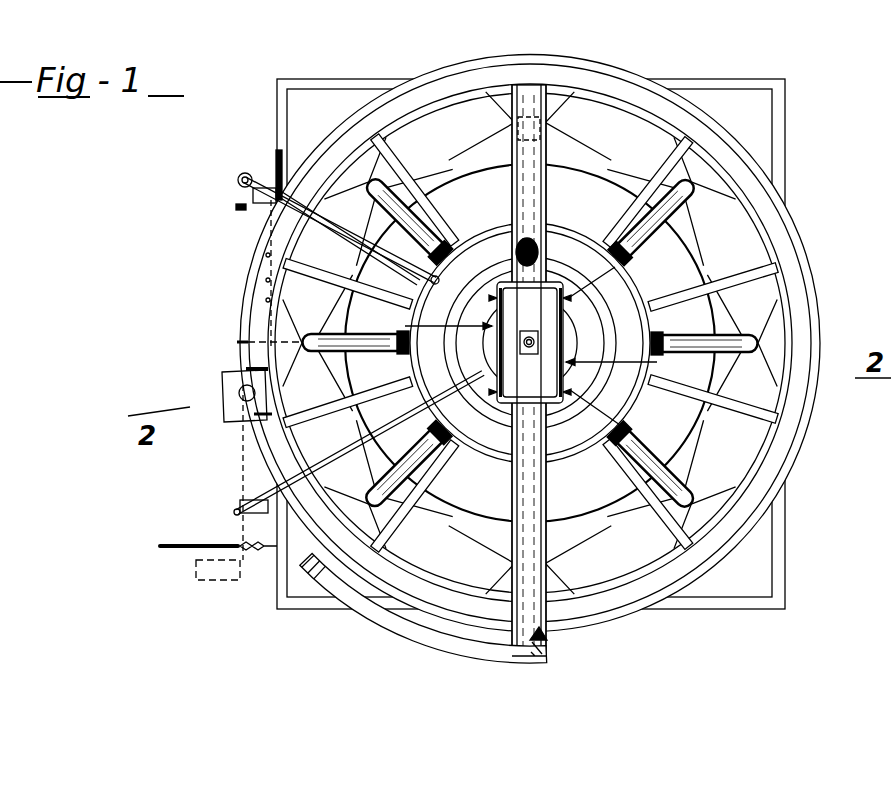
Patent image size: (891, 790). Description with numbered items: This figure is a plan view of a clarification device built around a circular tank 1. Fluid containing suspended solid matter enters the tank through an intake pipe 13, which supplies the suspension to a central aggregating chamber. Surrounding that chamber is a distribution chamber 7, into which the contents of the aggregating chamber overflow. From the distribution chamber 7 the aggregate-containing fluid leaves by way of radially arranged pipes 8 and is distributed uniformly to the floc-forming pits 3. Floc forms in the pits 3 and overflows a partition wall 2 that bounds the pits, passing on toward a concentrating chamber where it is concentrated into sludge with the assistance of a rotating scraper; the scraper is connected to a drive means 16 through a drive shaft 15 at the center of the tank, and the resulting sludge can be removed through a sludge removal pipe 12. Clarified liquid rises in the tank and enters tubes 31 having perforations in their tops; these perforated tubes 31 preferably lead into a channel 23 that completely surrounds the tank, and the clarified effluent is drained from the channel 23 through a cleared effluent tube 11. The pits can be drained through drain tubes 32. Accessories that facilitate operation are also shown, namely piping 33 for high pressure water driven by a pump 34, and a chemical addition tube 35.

The tank 1 is at (790, 398).
The partition wall 2 is at (568, 166).
The floc-forming pits 3 is at (386, 172).
The distribution chamber 7 is at (632, 395).
The pipes 8 is at (432, 221).
The cleared effluent tube 11 is at (238, 404).
The sludge removal pipe 12 is at (348, 448).
The intake pipe 13 is at (232, 183).
The drive shaft 15 is at (510, 358).
The drive means 16 is at (528, 331).
The channel 23 is at (772, 208).
The tubes 31 is at (320, 280).
The drain tubes 32 is at (344, 148).
The piping 33 is at (562, 305).
The pump 34 is at (248, 493).
The chemical addition tube 35 is at (268, 162).